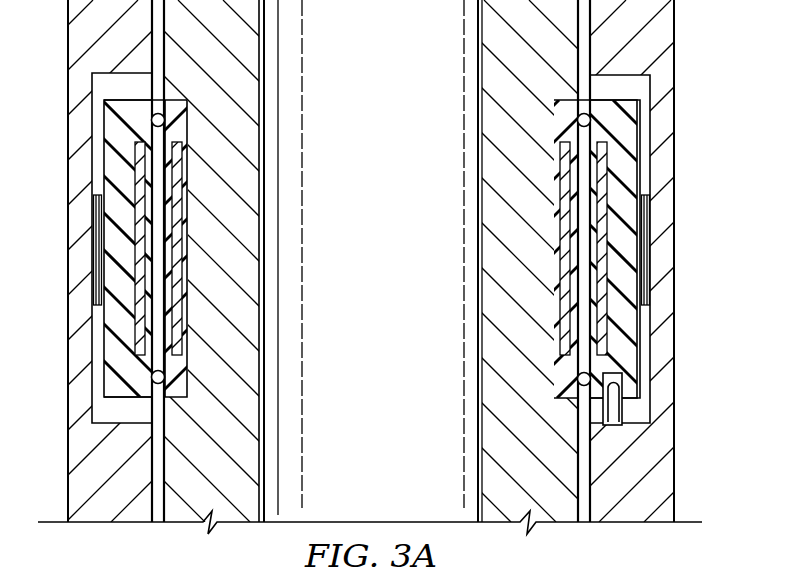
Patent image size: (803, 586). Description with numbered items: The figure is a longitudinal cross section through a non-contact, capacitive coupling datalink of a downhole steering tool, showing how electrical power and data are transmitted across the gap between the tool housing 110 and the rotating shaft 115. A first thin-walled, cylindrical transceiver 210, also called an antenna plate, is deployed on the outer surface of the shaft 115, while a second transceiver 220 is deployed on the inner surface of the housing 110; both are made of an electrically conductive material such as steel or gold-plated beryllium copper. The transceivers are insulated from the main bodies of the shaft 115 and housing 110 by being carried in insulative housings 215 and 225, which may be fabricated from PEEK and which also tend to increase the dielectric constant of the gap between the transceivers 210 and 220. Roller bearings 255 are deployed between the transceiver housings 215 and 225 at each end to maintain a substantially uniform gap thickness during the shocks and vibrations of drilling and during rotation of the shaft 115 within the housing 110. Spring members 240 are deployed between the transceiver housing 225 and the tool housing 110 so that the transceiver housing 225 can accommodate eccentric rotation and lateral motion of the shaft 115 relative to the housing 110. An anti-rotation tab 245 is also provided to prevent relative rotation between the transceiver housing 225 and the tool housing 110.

The housing 110 is at (68, 455).
The shaft 115 is at (182, 513).
The first transceiver 210 is at (177, 283).
The insulative housing 215 is at (183, 133).
The second transceiver 220 is at (118, 335).
The insulative housing 225 is at (113, 163).
The spring member 240 is at (88, 252).
The anti-rotation tab 245 is at (623, 410).
The bearing 255 is at (162, 373).